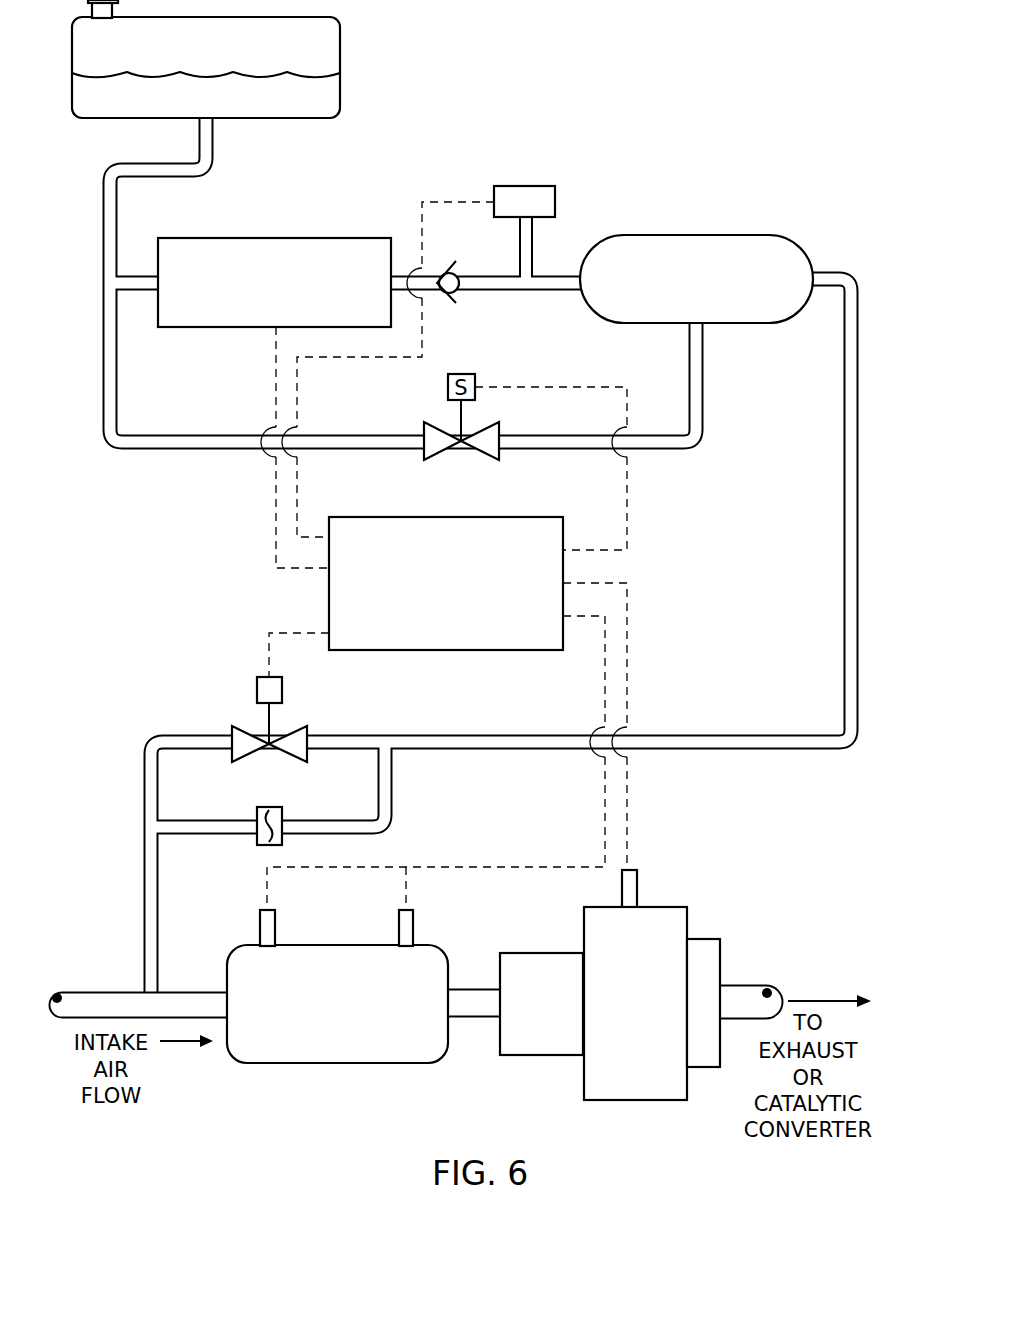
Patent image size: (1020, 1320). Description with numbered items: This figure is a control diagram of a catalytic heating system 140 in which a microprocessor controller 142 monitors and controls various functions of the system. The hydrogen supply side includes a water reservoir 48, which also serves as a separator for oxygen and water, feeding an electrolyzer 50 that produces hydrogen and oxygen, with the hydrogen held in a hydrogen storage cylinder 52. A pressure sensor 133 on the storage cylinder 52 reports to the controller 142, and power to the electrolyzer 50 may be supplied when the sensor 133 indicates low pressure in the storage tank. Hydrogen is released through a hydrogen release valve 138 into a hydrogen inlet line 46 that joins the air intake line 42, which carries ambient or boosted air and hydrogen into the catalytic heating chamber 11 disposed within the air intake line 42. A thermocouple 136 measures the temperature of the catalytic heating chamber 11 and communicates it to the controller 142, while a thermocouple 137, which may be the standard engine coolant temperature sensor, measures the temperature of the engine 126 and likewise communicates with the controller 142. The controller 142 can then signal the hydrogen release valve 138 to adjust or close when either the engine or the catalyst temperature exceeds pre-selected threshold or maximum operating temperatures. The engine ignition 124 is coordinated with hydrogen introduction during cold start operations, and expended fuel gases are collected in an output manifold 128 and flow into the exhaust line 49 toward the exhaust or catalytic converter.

The catalytic heating chamber 11 is at (312, 1063).
The air intake line 42 is at (120, 992).
The hydrogen inlet line 46 is at (158, 780).
The water reservoir 48 is at (341, 57).
The exhaust line 49 is at (745, 986).
The electrolyzer 50 is at (256, 238).
The hydrogen storage cylinder 52 is at (707, 235).
The engine ignition 124 is at (527, 1018).
The engine 126 is at (618, 1018).
The output manifold 128 is at (720, 940).
The pressure sensor 133 is at (557, 204).
The thermocouple 136 is at (398, 915).
The thermocouple 137 is at (258, 914).
The hydrogen release valve 138 is at (306, 726).
The catalytic heating system 140 is at (718, 84).
The microprocessor controller 142 is at (460, 517).